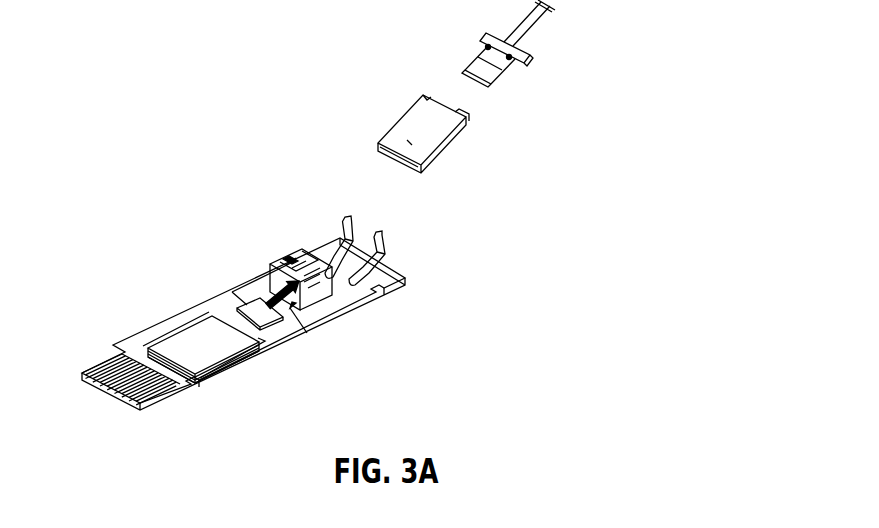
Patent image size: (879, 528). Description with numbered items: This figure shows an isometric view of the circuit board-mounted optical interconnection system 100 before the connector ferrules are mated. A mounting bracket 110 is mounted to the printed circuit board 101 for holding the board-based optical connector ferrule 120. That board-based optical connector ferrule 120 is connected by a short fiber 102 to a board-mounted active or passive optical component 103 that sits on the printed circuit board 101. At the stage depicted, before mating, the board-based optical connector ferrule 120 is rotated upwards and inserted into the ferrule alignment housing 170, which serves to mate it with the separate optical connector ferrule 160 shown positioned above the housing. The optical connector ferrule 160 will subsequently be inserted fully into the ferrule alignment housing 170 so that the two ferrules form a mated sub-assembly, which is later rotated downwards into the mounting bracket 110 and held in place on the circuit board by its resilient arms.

The circuit board-mounted optical interconnection system 100 is at (190, 87).
The printed circuit board 101 is at (168, 315).
The short fiber 102 is at (307, 333).
The board-mounted active or passive optical component 103 is at (280, 322).
The mounting bracket 110 is at (340, 214).
The board-based optical connector ferrule 120 is at (297, 250).
The optical connector ferrule 160 is at (513, 68).
The ferrule alignment housing 170 is at (443, 153).